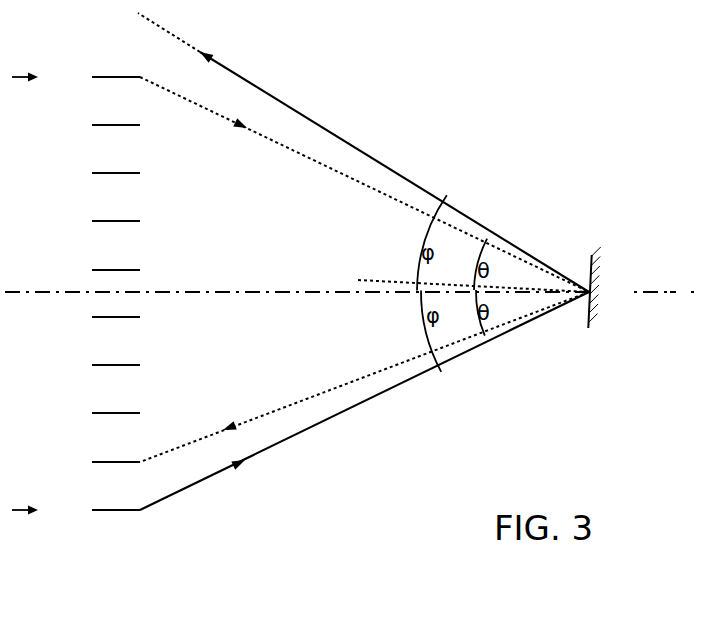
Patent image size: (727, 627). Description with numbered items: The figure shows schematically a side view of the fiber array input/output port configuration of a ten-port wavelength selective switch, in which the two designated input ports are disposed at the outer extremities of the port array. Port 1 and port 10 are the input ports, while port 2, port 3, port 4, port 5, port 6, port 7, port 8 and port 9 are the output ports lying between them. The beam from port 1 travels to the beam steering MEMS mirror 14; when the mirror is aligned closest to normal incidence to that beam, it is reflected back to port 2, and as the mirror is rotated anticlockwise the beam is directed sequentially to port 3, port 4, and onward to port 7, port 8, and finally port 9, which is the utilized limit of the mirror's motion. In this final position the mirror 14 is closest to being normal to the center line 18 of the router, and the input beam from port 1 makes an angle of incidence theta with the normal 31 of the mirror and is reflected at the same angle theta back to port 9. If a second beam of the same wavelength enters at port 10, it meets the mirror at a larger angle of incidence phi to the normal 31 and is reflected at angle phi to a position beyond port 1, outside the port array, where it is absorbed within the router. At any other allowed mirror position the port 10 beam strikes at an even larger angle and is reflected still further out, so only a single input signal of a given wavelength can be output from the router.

The input port 1 is at (94, 71).
The output port 2 is at (89, 119).
The output port 3 is at (89, 167).
The output port 4 is at (89, 215).
The output port 5 is at (89, 264).
The output port 6 is at (89, 311).
The output port 7 is at (89, 359).
The output port 8 is at (89, 407).
The output port 9 is at (89, 456).
The input port 10 is at (94, 504).
The beam steering MEMS mirror 14 is at (590, 264).
The center line 18 is at (690, 292).
The normal 31 is at (363, 280).